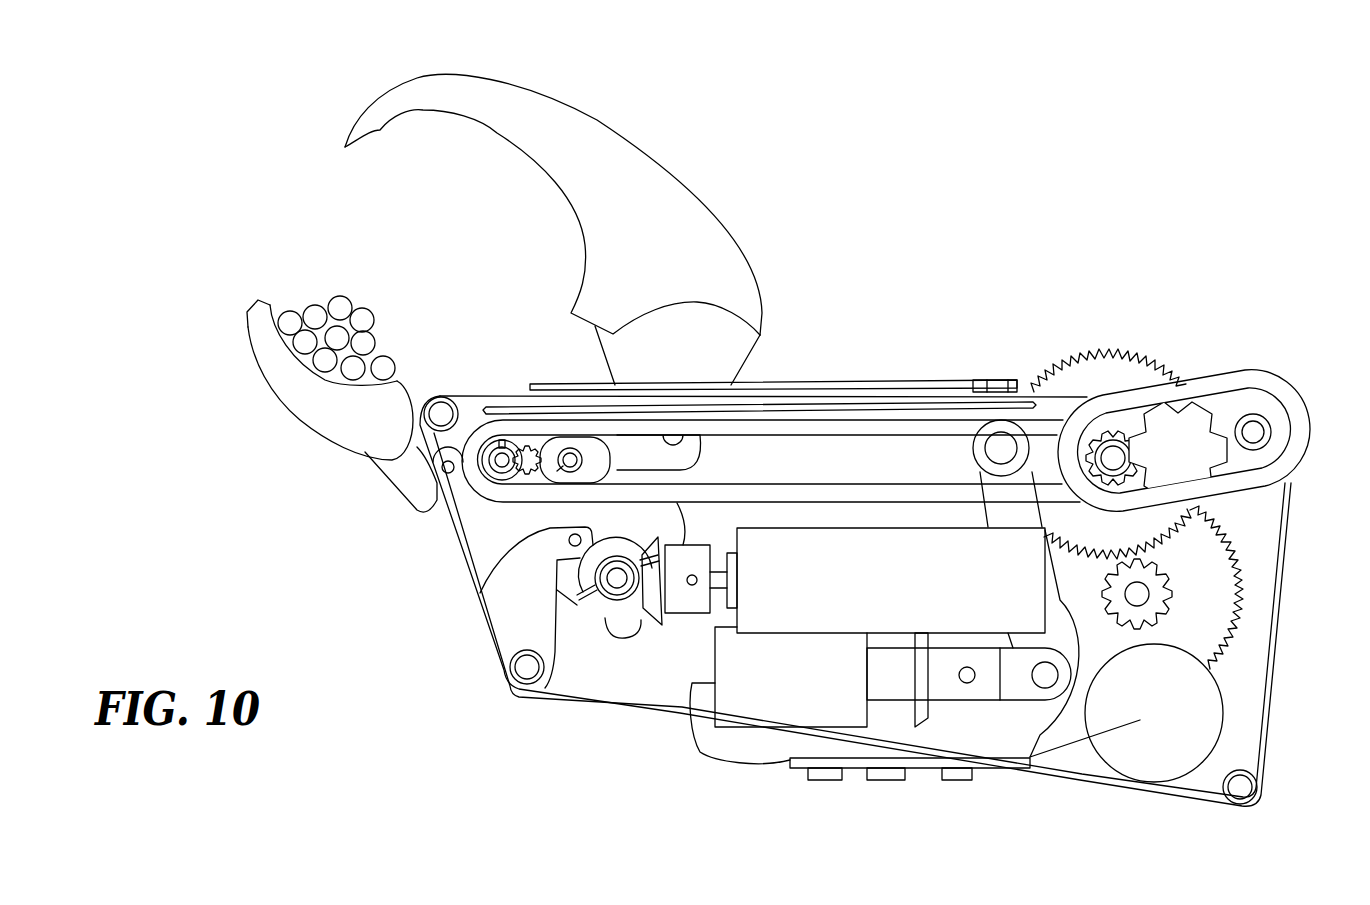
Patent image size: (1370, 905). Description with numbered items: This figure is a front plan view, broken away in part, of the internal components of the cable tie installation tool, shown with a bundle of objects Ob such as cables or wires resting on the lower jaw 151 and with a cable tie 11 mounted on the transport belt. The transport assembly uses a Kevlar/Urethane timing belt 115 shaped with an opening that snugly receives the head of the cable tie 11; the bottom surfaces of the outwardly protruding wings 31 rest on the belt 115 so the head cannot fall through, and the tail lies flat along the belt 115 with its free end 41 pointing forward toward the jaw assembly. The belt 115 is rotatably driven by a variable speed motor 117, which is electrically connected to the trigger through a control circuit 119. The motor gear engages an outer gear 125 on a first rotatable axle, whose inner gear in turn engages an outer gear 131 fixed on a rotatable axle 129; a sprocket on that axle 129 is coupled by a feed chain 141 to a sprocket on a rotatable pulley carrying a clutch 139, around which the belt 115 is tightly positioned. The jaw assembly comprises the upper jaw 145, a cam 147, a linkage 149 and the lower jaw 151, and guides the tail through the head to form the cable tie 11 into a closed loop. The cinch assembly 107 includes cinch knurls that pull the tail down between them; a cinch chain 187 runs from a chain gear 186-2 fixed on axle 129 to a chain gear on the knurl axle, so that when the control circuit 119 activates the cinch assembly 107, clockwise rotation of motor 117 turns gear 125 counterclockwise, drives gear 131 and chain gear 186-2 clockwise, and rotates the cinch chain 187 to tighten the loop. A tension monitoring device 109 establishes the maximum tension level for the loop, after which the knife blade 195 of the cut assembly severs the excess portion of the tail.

The upper jaw 145 is at (527, 87).
The lower jaw 151 is at (310, 430).
The bundle of objects Ob is at (343, 300).
The free end 41 is at (532, 377).
The timing belt 115 is at (1123, 790).
The cable tie 11 is at (880, 387).
The outwardly protruding wings 31 is at (1000, 380).
The knife blade 195 is at (840, 405).
The cinch assembly 107 is at (612, 440).
The cinch chain 187 is at (923, 437).
The outer gear 131 is at (1070, 357).
The feed chain 141 is at (1308, 390).
The rotatable axle 129 is at (1117, 457).
The chain gear 186-2 is at (1097, 450).
The clutch 139 is at (1243, 413).
The outer gear 125 is at (1243, 582).
The variable speed motor 117 is at (1230, 703).
The tension monitoring device 109 is at (853, 793).
The control circuit 119 is at (923, 770).
The linkage 149 is at (515, 608).
The cam 147 is at (607, 518).